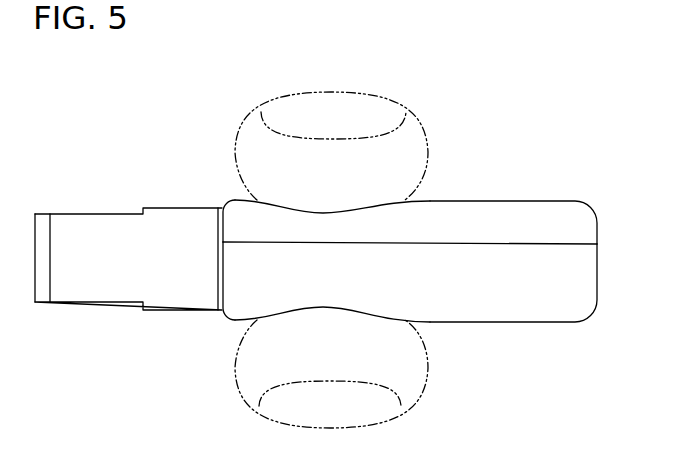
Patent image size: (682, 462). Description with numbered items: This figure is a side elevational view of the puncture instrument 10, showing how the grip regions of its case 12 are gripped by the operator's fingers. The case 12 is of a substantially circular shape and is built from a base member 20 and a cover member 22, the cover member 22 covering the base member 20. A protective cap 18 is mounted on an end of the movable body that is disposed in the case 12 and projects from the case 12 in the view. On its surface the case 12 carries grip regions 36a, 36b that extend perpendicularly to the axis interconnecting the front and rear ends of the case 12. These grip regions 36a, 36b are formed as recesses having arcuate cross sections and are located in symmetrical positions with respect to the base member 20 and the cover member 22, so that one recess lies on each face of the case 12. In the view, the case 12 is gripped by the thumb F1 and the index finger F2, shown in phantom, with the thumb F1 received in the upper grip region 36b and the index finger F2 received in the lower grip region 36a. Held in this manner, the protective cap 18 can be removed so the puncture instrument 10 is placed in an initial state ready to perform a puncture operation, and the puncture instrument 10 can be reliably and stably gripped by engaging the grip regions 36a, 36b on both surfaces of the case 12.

The puncture instrument 10 is at (533, 68).
The case 12 is at (410, 247).
The protective cap 18 is at (86, 307).
The base member 20 is at (534, 320).
The cover member 22 is at (541, 217).
The grip region 36a is at (323, 308).
The grip region 36b is at (323, 211).
The thumb F1 is at (421, 131).
The index finger F2 is at (420, 389).